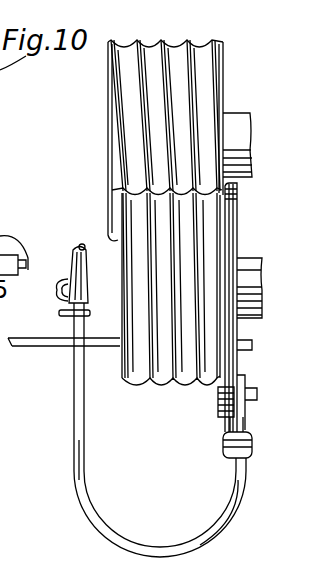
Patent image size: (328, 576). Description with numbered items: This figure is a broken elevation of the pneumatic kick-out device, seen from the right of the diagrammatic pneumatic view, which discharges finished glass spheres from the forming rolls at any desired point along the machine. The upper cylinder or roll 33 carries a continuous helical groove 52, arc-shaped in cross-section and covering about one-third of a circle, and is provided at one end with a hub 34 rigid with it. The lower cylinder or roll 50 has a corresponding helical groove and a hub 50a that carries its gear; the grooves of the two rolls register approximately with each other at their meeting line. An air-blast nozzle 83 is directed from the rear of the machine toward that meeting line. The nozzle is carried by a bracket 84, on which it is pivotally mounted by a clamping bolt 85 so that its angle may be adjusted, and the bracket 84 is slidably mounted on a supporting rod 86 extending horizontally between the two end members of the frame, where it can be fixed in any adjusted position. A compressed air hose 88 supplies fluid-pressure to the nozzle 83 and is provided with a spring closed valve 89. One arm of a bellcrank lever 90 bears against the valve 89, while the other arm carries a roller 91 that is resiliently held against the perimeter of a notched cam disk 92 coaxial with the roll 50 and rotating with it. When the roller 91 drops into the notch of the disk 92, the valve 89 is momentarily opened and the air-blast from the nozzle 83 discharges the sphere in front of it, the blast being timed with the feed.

The helical groove 52 is at (115, 118).
The cylinder or roll 33 is at (225, 92).
The hub 34 is at (255, 107).
The notched cam disk 92 is at (237, 227).
The hub 50a is at (263, 268).
The cylinder or roll 50 is at (171, 303).
The roller 91 is at (220, 400).
The bellcrank lever 90 is at (247, 410).
The spring closed valve 89 is at (253, 445).
The compressed air hose 88 is at (247, 482).
The air-blast nozzle 83 is at (79, 246).
The clamping bolt 85 is at (56, 290).
The bracket 84 is at (60, 313).
The supporting rod 86 is at (37, 346).